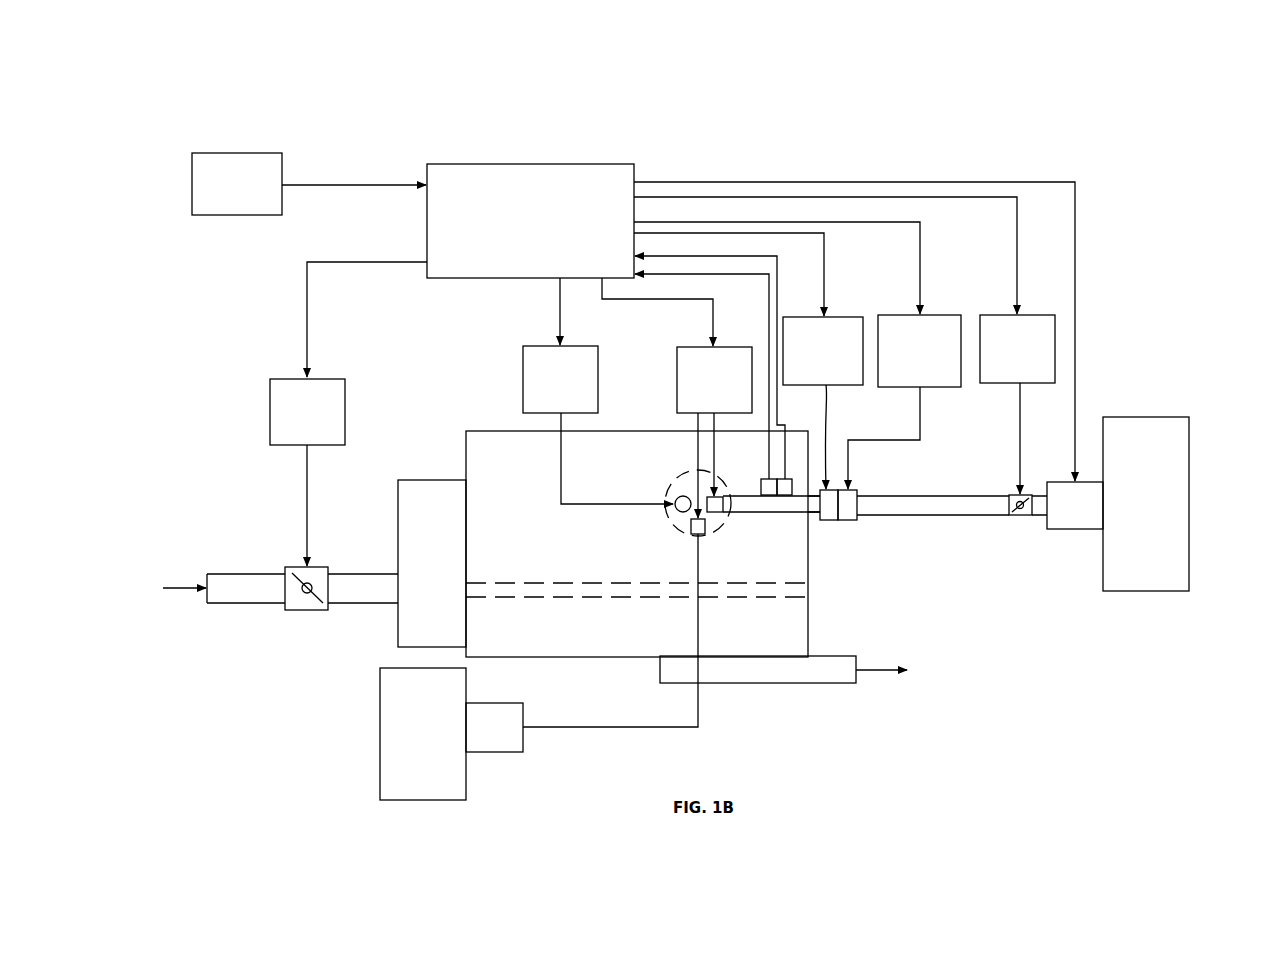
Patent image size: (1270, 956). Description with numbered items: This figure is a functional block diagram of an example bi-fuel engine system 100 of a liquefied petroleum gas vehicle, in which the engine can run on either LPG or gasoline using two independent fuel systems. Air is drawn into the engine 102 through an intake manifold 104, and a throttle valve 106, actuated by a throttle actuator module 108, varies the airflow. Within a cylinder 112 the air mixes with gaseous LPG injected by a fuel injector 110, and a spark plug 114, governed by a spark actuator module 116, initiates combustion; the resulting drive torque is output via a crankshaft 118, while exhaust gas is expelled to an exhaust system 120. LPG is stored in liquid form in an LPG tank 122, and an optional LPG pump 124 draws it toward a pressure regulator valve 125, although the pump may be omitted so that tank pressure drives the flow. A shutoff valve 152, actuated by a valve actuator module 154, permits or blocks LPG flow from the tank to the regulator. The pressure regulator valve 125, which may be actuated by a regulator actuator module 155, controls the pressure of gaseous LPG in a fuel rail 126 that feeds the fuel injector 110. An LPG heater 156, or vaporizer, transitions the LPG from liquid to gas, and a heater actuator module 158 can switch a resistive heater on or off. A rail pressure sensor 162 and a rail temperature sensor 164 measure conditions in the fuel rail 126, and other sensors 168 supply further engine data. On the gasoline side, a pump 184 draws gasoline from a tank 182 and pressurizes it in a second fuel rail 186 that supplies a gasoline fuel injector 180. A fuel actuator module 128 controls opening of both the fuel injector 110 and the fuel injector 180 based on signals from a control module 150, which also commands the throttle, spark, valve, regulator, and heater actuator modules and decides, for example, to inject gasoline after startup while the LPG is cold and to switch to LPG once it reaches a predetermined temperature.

The engine system 100 is at (1062, 93).
The engine 102 is at (608, 431).
The intake manifold 104 is at (428, 480).
The throttle valve 106 is at (310, 610).
The throttle actuator module 108 is at (283, 379).
The fuel injector 110 is at (713, 512).
The cylinder 112 is at (676, 462).
The spark plug 114 is at (676, 510).
The spark actuator module 116 is at (574, 346).
The crankshaft 118 is at (708, 600).
The exhaust system 120 is at (814, 700).
The LPG tank 122 is at (1189, 487).
The LPG pump 124 is at (1075, 529).
The pressure regulator valve 125 is at (854, 490).
The fuel rail 126 is at (730, 512).
The fuel actuator module 128 is at (727, 347).
The control module 150 is at (552, 164).
The shutoff valve 152 is at (1020, 515).
The valve actuator module 154 is at (1032, 315).
The regulator actuator module 155 is at (938, 315).
The LPG heater 156 is at (825, 520).
The heater actuator module 158 is at (843, 317).
The rail pressure sensor 162 is at (762, 479).
The rail temperature sensor 164 is at (786, 513).
The other sensors 168 is at (230, 153).
The fuel injector 180 is at (687, 533).
The tank 182 is at (380, 733).
The pump 184 is at (497, 703).
The fuel rail 186 is at (585, 727).